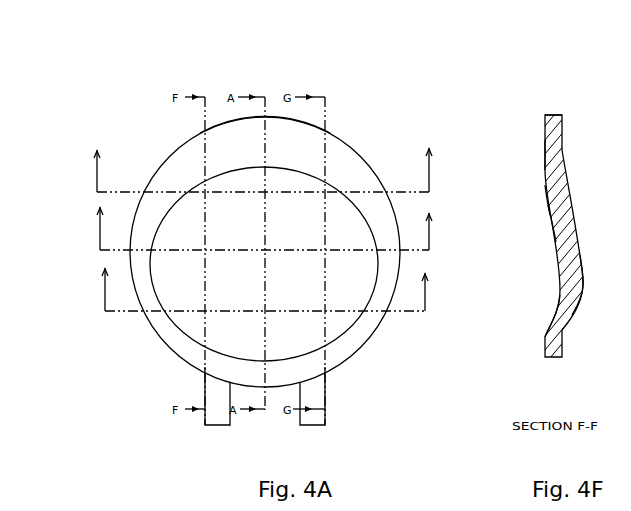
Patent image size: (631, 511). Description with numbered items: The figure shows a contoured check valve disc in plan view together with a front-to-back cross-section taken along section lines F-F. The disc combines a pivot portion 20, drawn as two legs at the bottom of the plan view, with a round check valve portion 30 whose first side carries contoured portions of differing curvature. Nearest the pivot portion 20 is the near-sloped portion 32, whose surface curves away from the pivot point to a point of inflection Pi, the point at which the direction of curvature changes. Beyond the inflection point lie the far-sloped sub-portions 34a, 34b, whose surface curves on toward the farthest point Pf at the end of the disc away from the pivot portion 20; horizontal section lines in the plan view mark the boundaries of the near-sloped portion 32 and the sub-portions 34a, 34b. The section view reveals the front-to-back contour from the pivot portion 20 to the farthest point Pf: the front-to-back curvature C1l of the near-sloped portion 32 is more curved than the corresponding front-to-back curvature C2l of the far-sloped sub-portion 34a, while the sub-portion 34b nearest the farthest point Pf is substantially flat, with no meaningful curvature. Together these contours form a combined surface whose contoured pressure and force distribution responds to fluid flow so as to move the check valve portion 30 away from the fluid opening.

In FIG. 4A, the farthest point Pf is at (250, 118).
In FIG. 4F, the farthest point Pf is at (540, 113).
In FIG. 4F, the point of inflection Pi is at (550, 275).
In FIG. 4A, the check valve portion 30 is at (175, 353).
In FIG. 4A, the pivot portion 20 is at (210, 412).
In FIG. 4A, the near-sloped portion 32 is at (82, 292).
In FIG. 4F, the near-sloped portion 32 is at (542, 310).
In FIG. 4A, the far-sloped sub-portion 34a is at (82, 225).
In FIG. 4F, the far-sloped sub-portion 34a is at (538, 203).
In FIG. 4A, the far-sloped sub-portion 34b is at (82, 157).
In FIG. 4F, the far-sloped sub-portion 34b is at (537, 155).
In FIG. 4F, the front-to-back curvature of near-sloped portion C1l is at (562, 298).
In FIG. 4F, the front-to-back curvature of far-sloped portion C2l is at (550, 216).